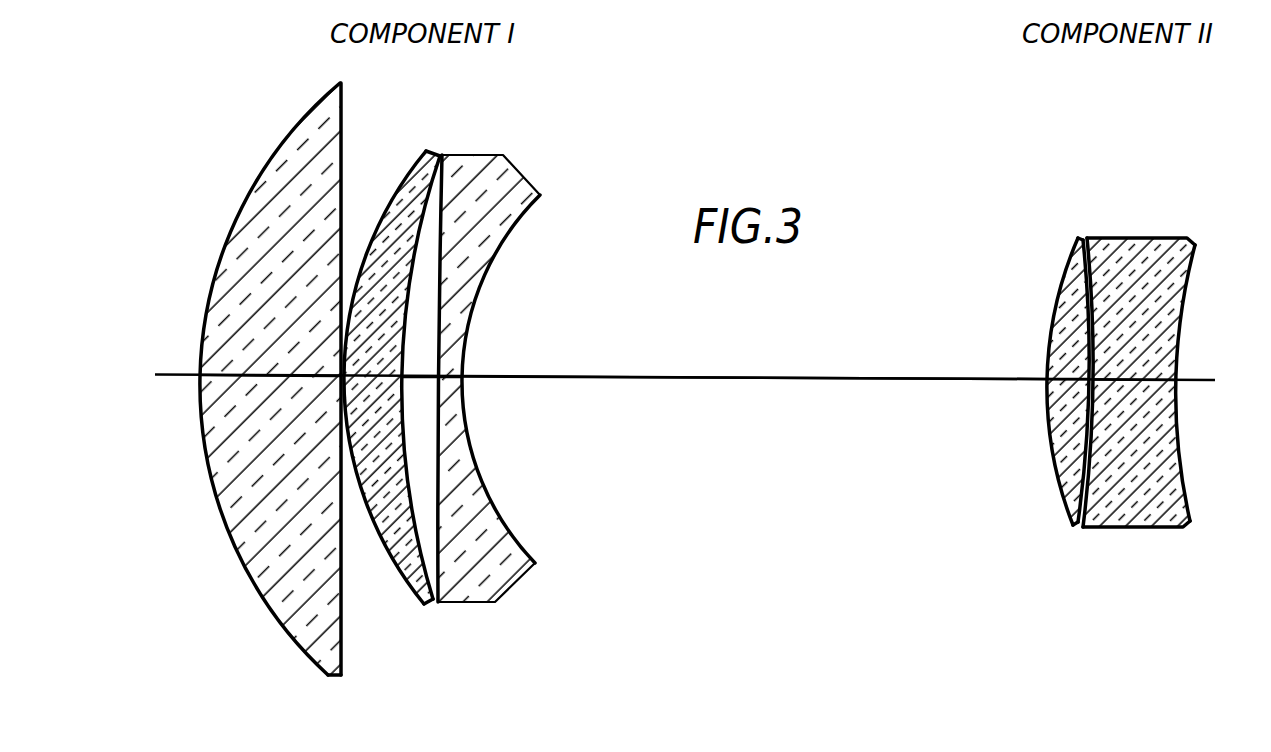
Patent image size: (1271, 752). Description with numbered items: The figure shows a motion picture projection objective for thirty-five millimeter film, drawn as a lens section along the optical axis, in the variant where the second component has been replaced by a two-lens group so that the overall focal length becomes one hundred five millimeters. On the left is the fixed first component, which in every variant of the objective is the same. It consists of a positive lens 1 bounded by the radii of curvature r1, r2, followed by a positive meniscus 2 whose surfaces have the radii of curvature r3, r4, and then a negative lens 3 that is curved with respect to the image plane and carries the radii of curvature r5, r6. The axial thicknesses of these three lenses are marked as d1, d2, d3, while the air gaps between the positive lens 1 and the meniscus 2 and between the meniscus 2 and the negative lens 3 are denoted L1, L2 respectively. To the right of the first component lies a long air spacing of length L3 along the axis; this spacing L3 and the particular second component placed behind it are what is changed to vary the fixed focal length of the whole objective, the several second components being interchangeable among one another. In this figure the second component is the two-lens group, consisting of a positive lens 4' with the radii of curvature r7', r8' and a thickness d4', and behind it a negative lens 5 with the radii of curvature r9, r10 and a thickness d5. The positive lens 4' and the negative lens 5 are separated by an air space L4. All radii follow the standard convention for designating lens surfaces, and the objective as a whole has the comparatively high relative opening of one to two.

The positive lens 1 is at (253, 379).
The positive meniscus 2 is at (392, 369).
The negative lens 3 is at (509, 353).
The positive lens 4' is at (1056, 370).
The negative lens 5 is at (1170, 399).
The air gap L1 is at (302, 379).
The air gap L2 is at (509, 375).
The air gap L3 is at (718, 380).
The air space L4 is at (1114, 398).
The lens thickness d1 is at (272, 378).
The lens thickness d2 is at (415, 381).
The lens thickness d3 is at (447, 381).
The lens thickness d4' is at (1030, 433).
The lens thickness d5 is at (1142, 382).
The radius of curvature r1 is at (247, 203).
The radius of curvature r2 is at (341, 223).
The radius of curvature r3 is at (378, 227).
The radius of curvature r4 is at (413, 233).
The radius of curvature r5 is at (446, 200).
The radius of curvature r6 is at (514, 223).
The radius of curvature r7' is at (1051, 357).
The radius of curvature r8' is at (1109, 353).
The radius of curvature r9 is at (1097, 308).
The radius of curvature r10 is at (1195, 268).